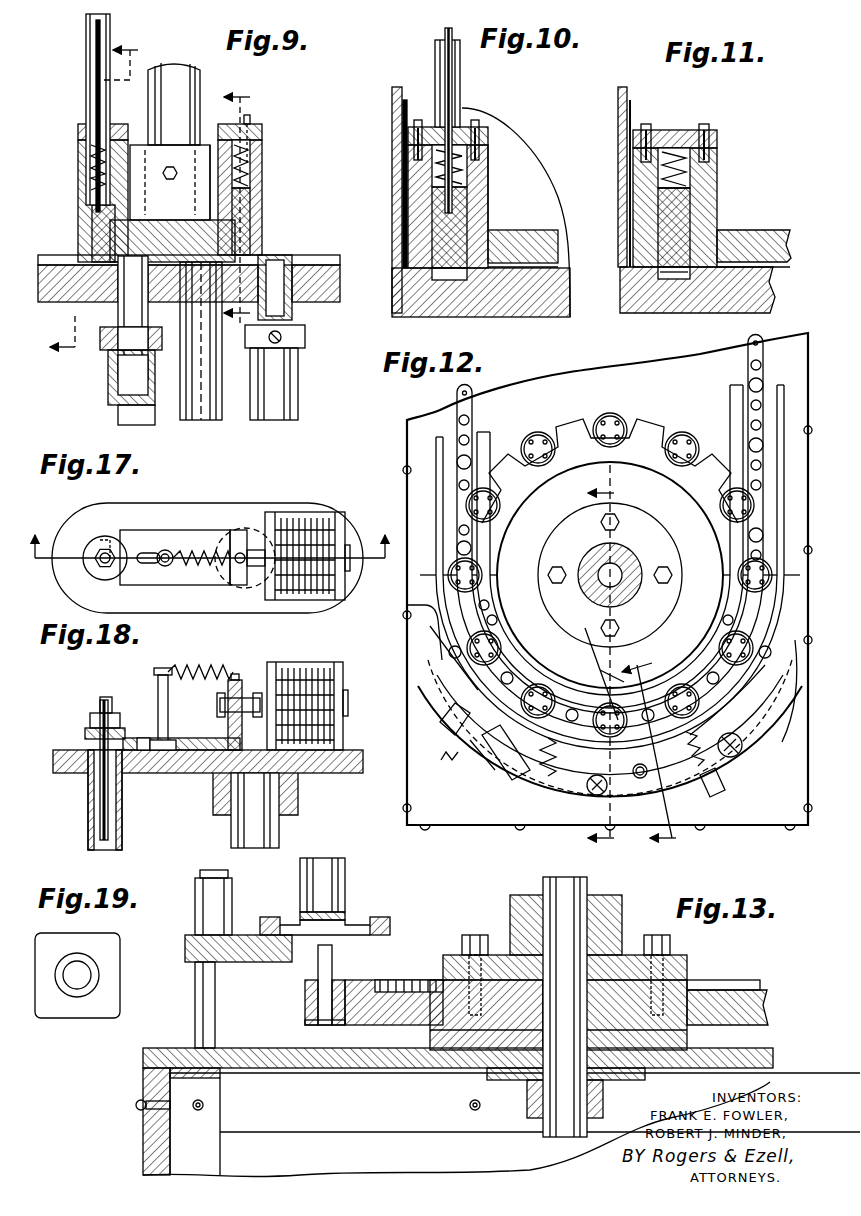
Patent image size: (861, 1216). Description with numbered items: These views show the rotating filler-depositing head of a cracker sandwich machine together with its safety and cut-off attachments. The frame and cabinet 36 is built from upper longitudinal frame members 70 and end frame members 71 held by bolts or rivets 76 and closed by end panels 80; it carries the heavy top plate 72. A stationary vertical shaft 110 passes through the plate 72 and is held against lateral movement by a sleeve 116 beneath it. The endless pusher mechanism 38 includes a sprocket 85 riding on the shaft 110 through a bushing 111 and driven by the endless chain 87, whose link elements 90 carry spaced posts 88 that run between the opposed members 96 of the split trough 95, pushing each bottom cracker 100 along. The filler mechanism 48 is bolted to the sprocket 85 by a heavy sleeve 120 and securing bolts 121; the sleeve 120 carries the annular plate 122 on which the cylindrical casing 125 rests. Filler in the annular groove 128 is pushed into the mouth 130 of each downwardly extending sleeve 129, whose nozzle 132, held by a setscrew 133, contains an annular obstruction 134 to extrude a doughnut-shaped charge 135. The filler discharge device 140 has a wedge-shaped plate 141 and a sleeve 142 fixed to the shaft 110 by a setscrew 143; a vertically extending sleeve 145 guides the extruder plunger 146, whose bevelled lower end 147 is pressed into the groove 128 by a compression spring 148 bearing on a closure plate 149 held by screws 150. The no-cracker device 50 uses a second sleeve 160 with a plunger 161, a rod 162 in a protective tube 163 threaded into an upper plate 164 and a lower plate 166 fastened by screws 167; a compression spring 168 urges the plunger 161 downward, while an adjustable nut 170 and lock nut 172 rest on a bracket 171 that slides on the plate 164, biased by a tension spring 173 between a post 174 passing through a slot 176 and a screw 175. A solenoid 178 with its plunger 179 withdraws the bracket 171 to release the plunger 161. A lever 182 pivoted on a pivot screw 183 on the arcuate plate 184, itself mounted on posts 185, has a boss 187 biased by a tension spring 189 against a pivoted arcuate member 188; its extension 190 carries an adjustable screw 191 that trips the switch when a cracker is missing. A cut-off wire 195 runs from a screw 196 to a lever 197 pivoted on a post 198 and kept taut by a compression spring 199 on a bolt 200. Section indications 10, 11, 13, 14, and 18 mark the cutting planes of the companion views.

In FIG. 9, the section line 10- 10 is at (107, 208).
In FIG. 9, the section line 11- 11 is at (249, 212).
In FIG. 12, the section line 13- 13 is at (614, 657).
In FIG. 12, the section line 14- 14 is at (663, 747).
In FIG. 17, the section line 18- 18 is at (214, 562).
In FIG. 12, the supporting frame and cabinet 36 is at (406, 445).
In FIG. 13, the supporting frame and cabinet 36 is at (140, 1152).
In FIG. 12, the endless pusher mechanism 38 is at (664, 430).
In FIG. 13, the endless pusher mechanism 38 is at (730, 978).
In FIG. 9, the filler material containing, mixing and discharging mechanism 48 is at (262, 80).
In FIG. 10, the filler material containing, mixing and discharging mechanism 48 is at (520, 120).
In FIG. 11, the filler material containing, mixing and discharging mechanism 48 is at (768, 128).
In FIG. 12, the filler material containing, mixing and discharging mechanism 48 is at (583, 414).
In FIG. 12, the "no cracker" device 50 is at (516, 768).
In FIG. 13, the upper longitudinal frame members 70 is at (368, 1120).
In FIG. 13, the upper end frame members 71 is at (148, 1082).
In FIG. 12, the top plate 72 is at (526, 392).
In FIG. 13, the top plate 72 is at (304, 1068).
In FIG. 12, the bolts or rivets 76 is at (403, 471).
In FIG. 13, the bolts or rivets 76 is at (134, 1106).
In FIG. 13, the end panels 80 is at (145, 1168).
In FIG. 12, the sprocket 85 is at (640, 422).
In FIG. 13, the sprocket 85 is at (768, 1000).
In FIG. 12, the endless chain 87 is at (457, 410).
In FIG. 13, the endless chain 87 is at (310, 1024).
In FIG. 12, the posts 88 is at (458, 462).
In FIG. 13, the posts 88 is at (334, 960).
In FIG. 12, the link elements 90 is at (457, 460).
In FIG. 13, the link elements 90 is at (306, 990).
In FIG. 12, the split trough 95 is at (434, 497).
In FIG. 13, the split trough 95 is at (396, 920).
In FIG. 12, the trough members 96 is at (480, 430).
In FIG. 13, the trough members 96 is at (270, 917).
In FIG. 12, the bottom cracker 100 is at (446, 630).
In FIG. 19, the bottom cracker 100 is at (102, 1012).
In FIG. 13, the bottom cracker 100 is at (352, 920).
In FIG. 9, the stationary vertical shaft 110 is at (172, 70).
In FIG. 12, the stationary vertical shaft 110 is at (586, 592).
In FIG. 18, the stationary vertical shaft 110 is at (262, 828).
In FIG. 13, the stationary vertical shaft 110 is at (565, 893).
In FIG. 13, the bushing 111 is at (600, 1032).
In FIG. 13, the sleeve 116 is at (528, 1105).
In FIG. 9, the heavy sleeve 120 is at (214, 398).
In FIG. 12, the heavy sleeve 120 is at (628, 550).
In FIG. 13, the heavy sleeve 120 is at (622, 905).
In FIG. 12, the securing bolts 121 is at (558, 566).
In FIG. 13, the securing bolts 121 is at (475, 936).
In FIG. 9, the centrally apertured plate 122 is at (306, 290).
In FIG. 10, the centrally apertured plate 122 is at (522, 308).
In FIG. 11, the centrally apertured plate 122 is at (745, 292).
In FIG. 10, the cylindrical casing 125 is at (392, 116).
In FIG. 11, the cylindrical casing 125 is at (618, 110).
In FIG. 9, the annular groove 128 is at (66, 262).
In FIG. 10, the annular groove 128 is at (450, 281).
In FIG. 11, the annular groove 128 is at (670, 280).
In FIG. 9, the sleeves 129 is at (118, 370).
In FIG. 12, the sleeves 129 is at (532, 436).
In FIG. 9, the mouth 130 is at (124, 280).
In FIG. 9, the nozzle 132 is at (112, 390).
In FIG. 12, the nozzle 132 is at (600, 448).
In FIG. 13, the nozzle 132 is at (322, 876).
In FIG. 9, the setscrew 133 is at (281, 340).
In FIG. 9, the annular obstruction 134 is at (138, 426).
In FIG. 12, the annular obstruction 134 is at (530, 434).
In FIG. 19, the filler material charge 135 is at (68, 993).
In FIG. 13, the filler material charge 135 is at (346, 916).
In FIG. 9, the filler discharge device 140 is at (268, 175).
In FIG. 10, the filler discharge device 140 is at (538, 226).
In FIG. 11, the filler discharge device 140 is at (720, 178).
In FIG. 9, the plate 141 is at (262, 200).
In FIG. 10, the plate 141 is at (556, 250).
In FIG. 11, the plate 141 is at (760, 240).
In FIG. 9, the sleeve 142 is at (165, 150).
In FIG. 9, the setscrew 143 is at (174, 168).
In FIG. 11, the vertically extending sleeve 145 is at (700, 196).
In FIG. 9, the filler material extruder plunger 146 is at (236, 220).
In FIG. 11, the filler material extruder plunger 146 is at (682, 215).
In FIG. 9, the bevelled lower end 147 is at (278, 258).
In FIG. 11, the bevelled lower end 147 is at (680, 280).
In FIG. 9, the compression spring 148 is at (262, 152).
In FIG. 11, the compression spring 148 is at (692, 170).
In FIG. 9, the closure plate 149 is at (262, 128).
In FIG. 11, the closure plate 149 is at (690, 130).
In FIG. 9, the screws 150 is at (252, 118).
In FIG. 11, the screws 150 is at (658, 108).
In FIG. 9, the second sleeve 160 is at (78, 182).
In FIG. 10, the second sleeve 160 is at (482, 198).
In FIG. 9, the plunger 161 is at (96, 222).
In FIG. 10, the plunger 161 is at (454, 222).
In FIG. 9, the rod 162 is at (96, 66).
In FIG. 10, the rod 162 is at (445, 32).
In FIG. 17, the rod 162 is at (108, 545).
In FIG. 18, the rod 162 is at (108, 832).
In FIG. 9, the protective tube 163 is at (86, 32).
In FIG. 10, the protective tube 163 is at (441, 58).
In FIG. 18, the protective tube 163 is at (92, 822).
In FIG. 17, the plate 164 is at (290, 504).
In FIG. 18, the plate 164 is at (188, 775).
In FIG. 9, the plate 166 is at (78, 132).
In FIG. 10, the plate 166 is at (490, 136).
In FIG. 10, the screws 167 is at (422, 120).
In FIG. 9, the compression spring 168 is at (90, 158).
In FIG. 10, the compression spring 168 is at (468, 170).
In FIG. 17, the adjustable nut 170 is at (96, 577).
In FIG. 18, the adjustable nut 170 is at (85, 734).
In FIG. 17, the bracket 171 is at (152, 586).
In FIG. 18, the bracket 171 is at (206, 738).
In FIG. 17, the lock nut 172 is at (99, 545).
In FIG. 18, the lock nut 172 is at (92, 718).
In FIG. 17, the tension spring 173 is at (202, 570).
In FIG. 18, the tension spring 173 is at (202, 662).
In FIG. 17, the post 174 is at (167, 549).
In FIG. 18, the post 174 is at (157, 700).
In FIG. 17, the screw 175 is at (248, 552).
In FIG. 18, the screw 175 is at (238, 672).
In FIG. 17, the slot 176 is at (150, 552).
In FIG. 18, the slot 176 is at (146, 738).
In FIG. 17, the solenoid 178 is at (300, 518).
In FIG. 18, the solenoid 178 is at (312, 666).
In FIG. 17, the plunger 179 is at (238, 536).
In FIG. 18, the plunger 179 is at (218, 699).
In FIG. 12, the lever 182 is at (496, 752).
In FIG. 13, the lever 182 is at (240, 923).
In FIG. 12, the pivot screw 183 is at (588, 792).
In FIG. 13, the pivot screw 183 is at (228, 882).
In FIG. 12, the arcuate plate 184 is at (430, 705).
In FIG. 13, the arcuate plate 184 is at (258, 964).
In FIG. 13, the posts 185 is at (196, 1006).
In FIG. 12, the boss 187 is at (448, 728).
In FIG. 12, the arcuate member 188 is at (460, 690).
In FIG. 12, the tension spring 189 is at (546, 777).
In FIG. 12, the extension 190 is at (485, 772).
In FIG. 12, the adjustable screw 191 is at (446, 765).
In FIG. 12, the filler material cut-off wire 195 is at (592, 665).
In FIG. 12, the screw 196 is at (590, 666).
In FIG. 12, the lever 197 is at (694, 768).
In FIG. 12, the post 198 is at (738, 758).
In FIG. 12, the compression spring 199 is at (742, 720).
In FIG. 12, the bolt 200 is at (720, 795).